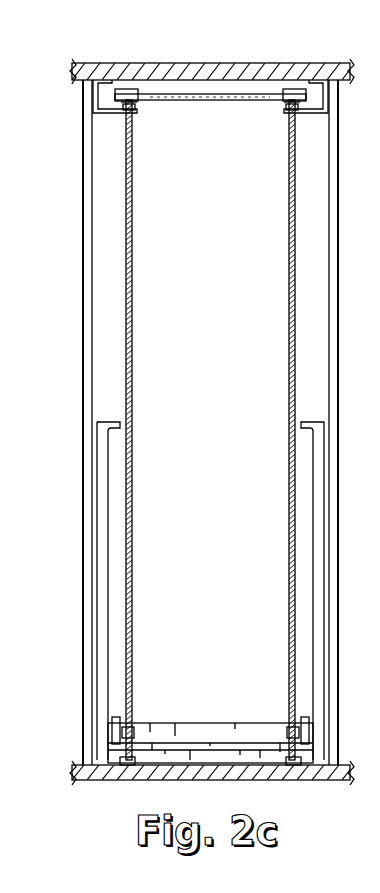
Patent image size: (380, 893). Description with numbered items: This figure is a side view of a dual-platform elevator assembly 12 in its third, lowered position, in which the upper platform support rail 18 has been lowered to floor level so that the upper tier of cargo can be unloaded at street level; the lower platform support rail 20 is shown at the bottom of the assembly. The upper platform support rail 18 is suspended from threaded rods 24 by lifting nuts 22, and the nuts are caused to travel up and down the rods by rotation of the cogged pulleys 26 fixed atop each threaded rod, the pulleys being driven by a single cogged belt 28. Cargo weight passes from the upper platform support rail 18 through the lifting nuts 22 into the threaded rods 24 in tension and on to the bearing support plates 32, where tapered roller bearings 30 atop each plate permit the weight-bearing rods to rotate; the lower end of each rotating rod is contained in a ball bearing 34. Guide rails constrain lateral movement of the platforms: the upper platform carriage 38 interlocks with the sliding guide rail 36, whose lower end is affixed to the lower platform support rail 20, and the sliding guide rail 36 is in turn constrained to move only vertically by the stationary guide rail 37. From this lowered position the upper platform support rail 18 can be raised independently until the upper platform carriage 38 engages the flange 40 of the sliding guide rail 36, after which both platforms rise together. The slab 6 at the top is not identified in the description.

The upper floor slab 6 is at (205, 63).
The dual-platform elevator assembly 12 is at (218, 305).
The upper platform support rail 18 is at (190, 725).
The lower platform support rail 20 is at (227, 760).
The lifting nuts 22 is at (133, 728).
The threaded rods 24 is at (132, 580).
The cogged pulleys 26 is at (292, 90).
The cogged belt 28 is at (165, 100).
The tapered roller bearings 30 is at (285, 107).
The bearing support plates 32 is at (314, 113).
The ball bearing 34 is at (120, 760).
The sliding guide rail 36 is at (101, 563).
The stationary guide rail 37 is at (86, 635).
The upper platform carriage 38 is at (113, 718).
The flange 40 is at (113, 421).